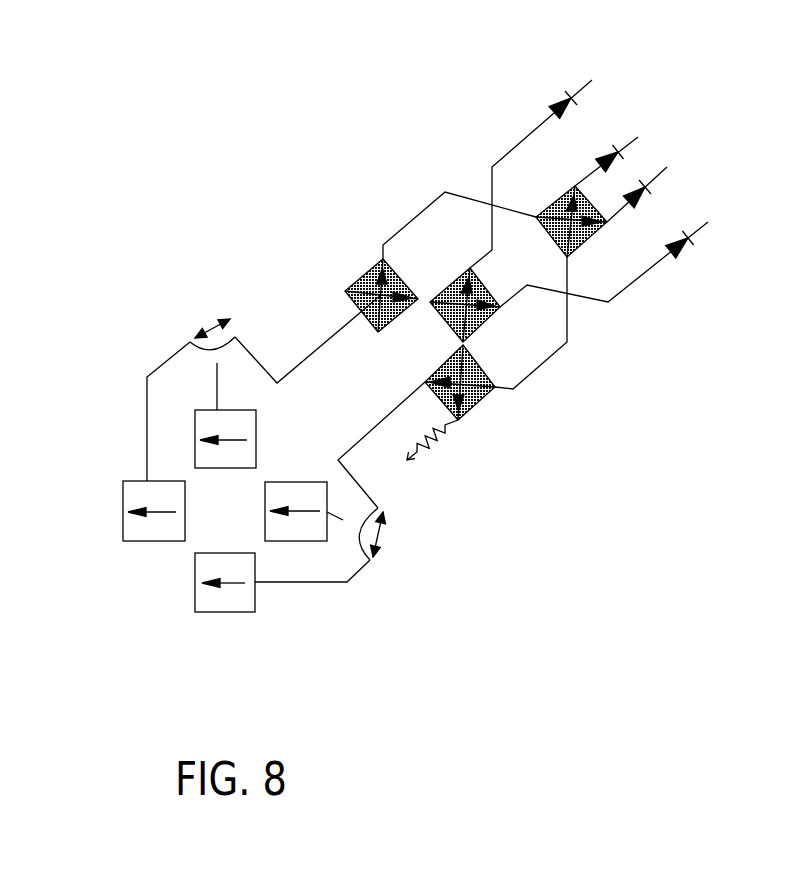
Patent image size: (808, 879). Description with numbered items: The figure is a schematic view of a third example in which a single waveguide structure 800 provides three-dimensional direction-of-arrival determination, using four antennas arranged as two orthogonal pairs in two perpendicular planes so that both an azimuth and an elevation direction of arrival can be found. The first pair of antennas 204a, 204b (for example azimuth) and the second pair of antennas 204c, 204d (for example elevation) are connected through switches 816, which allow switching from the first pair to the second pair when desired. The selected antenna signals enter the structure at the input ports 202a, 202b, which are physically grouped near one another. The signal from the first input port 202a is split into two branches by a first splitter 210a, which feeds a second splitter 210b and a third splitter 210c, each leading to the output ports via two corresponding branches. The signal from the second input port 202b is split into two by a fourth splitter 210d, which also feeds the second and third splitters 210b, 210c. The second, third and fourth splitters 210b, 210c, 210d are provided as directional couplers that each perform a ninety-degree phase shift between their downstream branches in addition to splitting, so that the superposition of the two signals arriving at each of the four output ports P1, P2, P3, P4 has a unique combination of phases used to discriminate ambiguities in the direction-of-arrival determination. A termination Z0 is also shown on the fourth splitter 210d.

The waveguide structure 800 is at (368, 152).
The input port 202a is at (305, 358).
The input port 202b is at (423, 395).
The first antenna 204a is at (133, 480).
The second antenna 204b is at (313, 480).
The antenna 204c is at (255, 411).
The antenna 204d is at (218, 613).
The first splitter 210a is at (357, 285).
The second splitter 210b is at (465, 305).
The third splitter 210c is at (571, 221).
The fourth splitter 210d is at (475, 408).
The switch 816 is at (210, 322).
The termination impedance Z0 is at (432, 448).
The output port P1 is at (583, 85).
The output port P2 is at (629, 141).
The output port P3 is at (655, 174).
The output port P4 is at (699, 228).